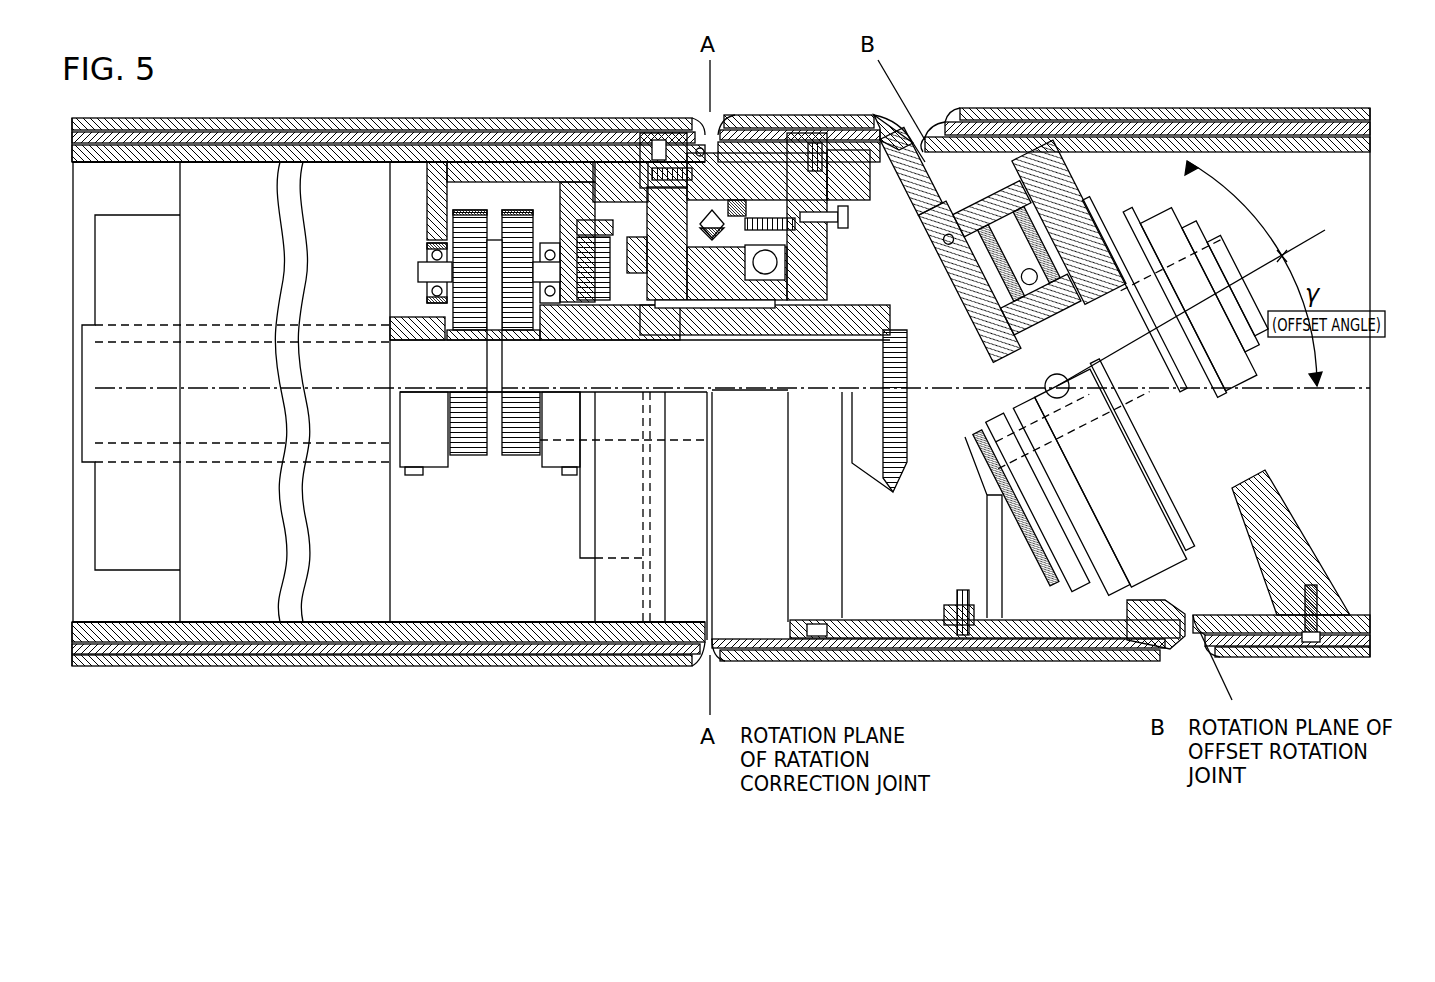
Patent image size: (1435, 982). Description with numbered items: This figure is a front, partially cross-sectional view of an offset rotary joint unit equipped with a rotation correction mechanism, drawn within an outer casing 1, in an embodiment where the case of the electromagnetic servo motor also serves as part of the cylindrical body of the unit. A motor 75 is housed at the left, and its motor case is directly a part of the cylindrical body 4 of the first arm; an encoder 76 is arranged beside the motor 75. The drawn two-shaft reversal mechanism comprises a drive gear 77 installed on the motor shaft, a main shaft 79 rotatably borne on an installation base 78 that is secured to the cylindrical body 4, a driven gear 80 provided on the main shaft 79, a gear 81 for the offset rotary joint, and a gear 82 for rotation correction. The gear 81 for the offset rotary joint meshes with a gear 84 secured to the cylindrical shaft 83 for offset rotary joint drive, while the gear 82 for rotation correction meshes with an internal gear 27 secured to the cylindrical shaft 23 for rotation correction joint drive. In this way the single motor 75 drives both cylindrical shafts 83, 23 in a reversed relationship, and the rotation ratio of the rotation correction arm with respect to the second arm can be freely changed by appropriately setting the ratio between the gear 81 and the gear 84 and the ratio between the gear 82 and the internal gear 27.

The outer casing 1 is at (240, 118).
The cylindrical body 4 is at (360, 640).
The cylindrical shaft for rotation correction joint drive 23 is at (745, 320).
The internal gear 27 is at (600, 230).
The motor 75 is at (208, 602).
The encoder 76 is at (142, 548).
The drive gear 77 is at (470, 418).
The installation base 78 is at (470, 210).
The main shaft 79 is at (425, 262).
The driven gear 80 is at (440, 172).
The gear for offset rotary joint 81 is at (517, 210).
The gear for rotation correction 82 is at (648, 128).
The cylindrical shaft for offset rotary joint drive 83 is at (706, 333).
The gear 84 is at (513, 430).